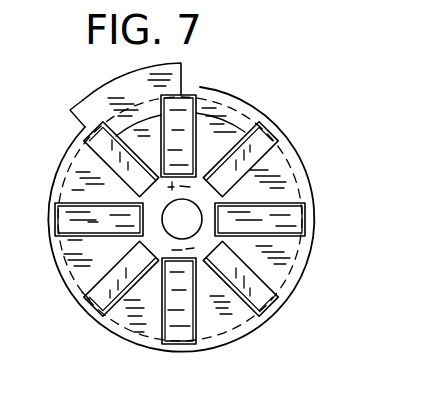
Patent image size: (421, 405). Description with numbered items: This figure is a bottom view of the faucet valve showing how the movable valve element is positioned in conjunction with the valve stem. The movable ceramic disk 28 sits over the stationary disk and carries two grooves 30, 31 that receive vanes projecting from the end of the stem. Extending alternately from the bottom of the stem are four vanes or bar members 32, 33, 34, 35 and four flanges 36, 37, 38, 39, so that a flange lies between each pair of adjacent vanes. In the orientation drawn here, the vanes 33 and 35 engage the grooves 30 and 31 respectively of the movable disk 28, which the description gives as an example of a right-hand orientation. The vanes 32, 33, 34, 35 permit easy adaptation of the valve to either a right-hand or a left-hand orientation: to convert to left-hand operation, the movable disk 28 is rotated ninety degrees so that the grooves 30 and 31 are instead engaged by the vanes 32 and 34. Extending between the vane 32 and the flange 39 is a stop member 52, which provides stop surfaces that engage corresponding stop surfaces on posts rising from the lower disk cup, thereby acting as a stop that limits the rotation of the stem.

The movable ceramic disk 28 is at (282, 172).
The groove 30 is at (58, 283).
The groove 31 is at (324, 247).
The vane 32 is at (183, 94).
The vane 33 is at (310, 212).
The vane 34 is at (187, 342).
The vane 35 is at (57, 223).
The flange 36 is at (259, 122).
The flange 37 is at (276, 300).
The flange 38 is at (98, 316).
The flange 39 is at (98, 152).
The stop member 52 is at (83, 100).